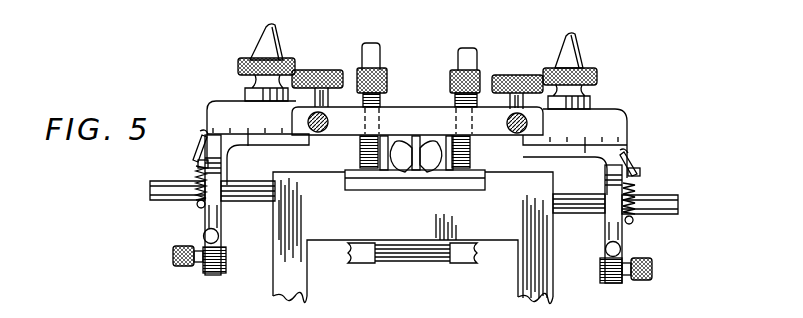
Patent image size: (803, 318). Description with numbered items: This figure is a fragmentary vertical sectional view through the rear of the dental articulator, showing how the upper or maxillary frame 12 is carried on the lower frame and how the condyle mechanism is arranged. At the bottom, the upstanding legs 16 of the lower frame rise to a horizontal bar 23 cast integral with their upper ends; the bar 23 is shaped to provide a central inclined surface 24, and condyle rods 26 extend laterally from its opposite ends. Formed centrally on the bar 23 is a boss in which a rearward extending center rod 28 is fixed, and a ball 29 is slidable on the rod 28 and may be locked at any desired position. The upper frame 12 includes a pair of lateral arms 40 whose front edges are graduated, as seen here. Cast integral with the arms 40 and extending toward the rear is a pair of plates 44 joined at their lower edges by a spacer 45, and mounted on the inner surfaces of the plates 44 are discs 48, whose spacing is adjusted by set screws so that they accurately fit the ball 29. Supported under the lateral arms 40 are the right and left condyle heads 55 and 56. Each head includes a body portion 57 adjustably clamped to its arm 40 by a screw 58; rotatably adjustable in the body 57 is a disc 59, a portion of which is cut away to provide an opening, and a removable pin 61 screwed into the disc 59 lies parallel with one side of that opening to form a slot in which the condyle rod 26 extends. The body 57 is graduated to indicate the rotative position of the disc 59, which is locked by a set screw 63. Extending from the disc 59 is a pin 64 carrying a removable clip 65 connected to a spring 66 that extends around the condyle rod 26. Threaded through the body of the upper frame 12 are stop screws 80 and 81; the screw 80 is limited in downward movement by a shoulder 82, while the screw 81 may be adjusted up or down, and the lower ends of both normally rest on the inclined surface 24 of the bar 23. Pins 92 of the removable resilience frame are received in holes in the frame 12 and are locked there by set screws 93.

The upper or maxillary frame 12 is at (605, 106).
The upstanding legs 16 is at (283, 280).
The horizontal bar 23 is at (335, 228).
The inclined surface 24 is at (478, 178).
The condyle rods 26 is at (150, 190).
The center rod 28 is at (417, 163).
The ball 29 is at (398, 168).
The lateral arms 40 is at (216, 106).
The plates 44 is at (370, 48).
The spacer 45 is at (425, 255).
The discs 48 is at (384, 143).
The right condyle head 55 is at (613, 286).
The left condyle head 56 is at (207, 274).
The body portion 57 is at (226, 256).
The screw 58 is at (268, 38).
The disc 59 is at (215, 178).
The removable pin 61 is at (203, 237).
The set screw 63 is at (173, 258).
The pin 64 is at (196, 158).
The removable clip 65 is at (198, 163).
The spring 66 is at (197, 204).
The stop screw 80 is at (477, 75).
The stop screw 81 is at (386, 84).
The shoulder 82 is at (458, 105).
The pins 92 is at (328, 124).
The set screws 93 is at (322, 70).